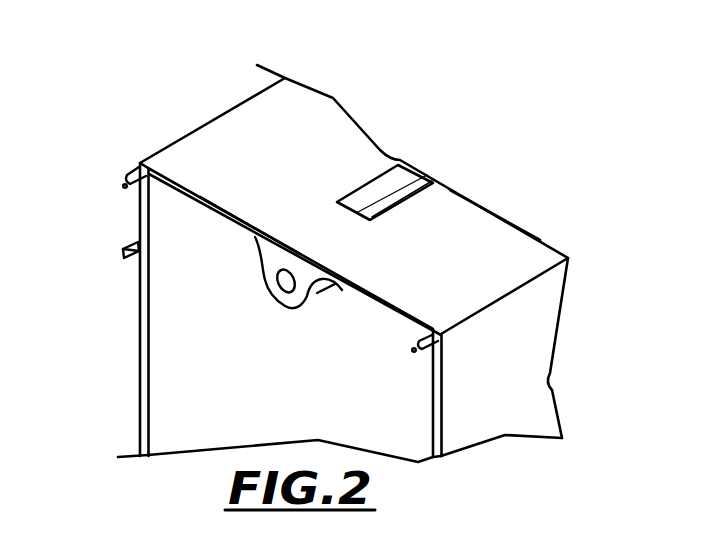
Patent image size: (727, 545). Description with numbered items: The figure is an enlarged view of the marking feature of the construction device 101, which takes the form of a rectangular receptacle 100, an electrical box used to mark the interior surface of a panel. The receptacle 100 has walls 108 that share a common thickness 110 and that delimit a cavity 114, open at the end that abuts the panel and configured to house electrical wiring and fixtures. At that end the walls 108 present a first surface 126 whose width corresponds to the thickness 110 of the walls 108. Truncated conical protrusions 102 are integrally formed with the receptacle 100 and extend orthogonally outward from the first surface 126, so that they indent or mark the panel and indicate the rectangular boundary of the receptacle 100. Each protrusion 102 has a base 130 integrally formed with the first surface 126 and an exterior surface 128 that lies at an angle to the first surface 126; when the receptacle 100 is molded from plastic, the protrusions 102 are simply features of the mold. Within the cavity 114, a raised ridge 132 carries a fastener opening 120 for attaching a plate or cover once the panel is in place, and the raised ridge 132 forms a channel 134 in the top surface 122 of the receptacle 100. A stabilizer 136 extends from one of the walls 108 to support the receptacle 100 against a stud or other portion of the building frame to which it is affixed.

The receptacle 100 is at (568, 258).
The construction device 101 is at (196, 91).
The protrusions 102 is at (135, 180).
The walls 108 is at (524, 369).
The thickness 110 is at (175, 335).
The cavity 114 is at (261, 361).
The fastener openings 120 is at (286, 281).
The top surface 122 is at (509, 251).
The first surface 126 is at (223, 218).
The exterior surface 128 is at (123, 189).
The base 130 is at (152, 167).
The raised ridges 132 is at (318, 294).
The channels 134 is at (424, 180).
The stabilizers 136 is at (124, 254).